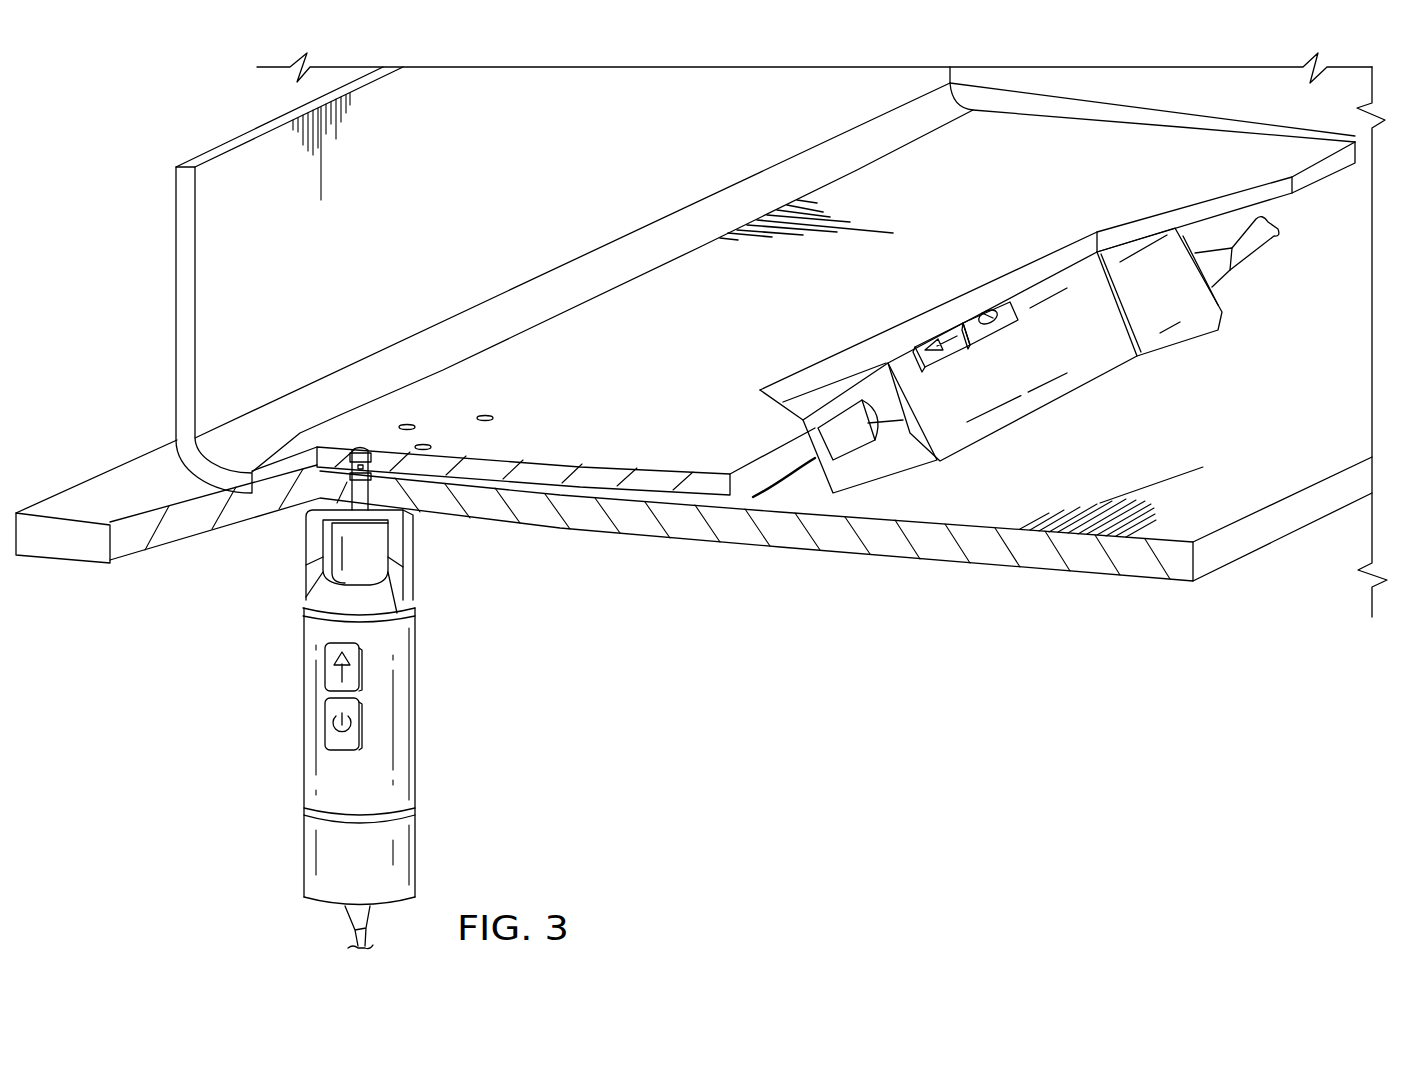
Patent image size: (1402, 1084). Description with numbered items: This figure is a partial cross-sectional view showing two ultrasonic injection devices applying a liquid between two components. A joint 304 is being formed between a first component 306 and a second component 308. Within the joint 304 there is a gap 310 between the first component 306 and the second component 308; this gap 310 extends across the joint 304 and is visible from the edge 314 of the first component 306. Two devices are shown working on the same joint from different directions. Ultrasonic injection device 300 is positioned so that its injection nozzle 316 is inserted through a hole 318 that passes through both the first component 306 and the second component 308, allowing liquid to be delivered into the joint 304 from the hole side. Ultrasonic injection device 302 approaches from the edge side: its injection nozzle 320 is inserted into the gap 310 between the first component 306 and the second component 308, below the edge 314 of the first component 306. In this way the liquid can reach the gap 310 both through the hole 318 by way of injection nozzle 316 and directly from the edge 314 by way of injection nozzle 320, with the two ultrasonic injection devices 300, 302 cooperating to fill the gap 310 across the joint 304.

The ultrasonic injection device 300 is at (278, 716).
The ultrasonic injection device 302 is at (1082, 404).
The joint 304 is at (537, 485).
The first component 306 is at (176, 302).
The second component 308 is at (890, 548).
The gap 310 is at (430, 480).
The edge 314 is at (812, 372).
The injection nozzle 316 is at (350, 481).
The hole 318 is at (359, 447).
The injection nozzle 320 is at (782, 500).